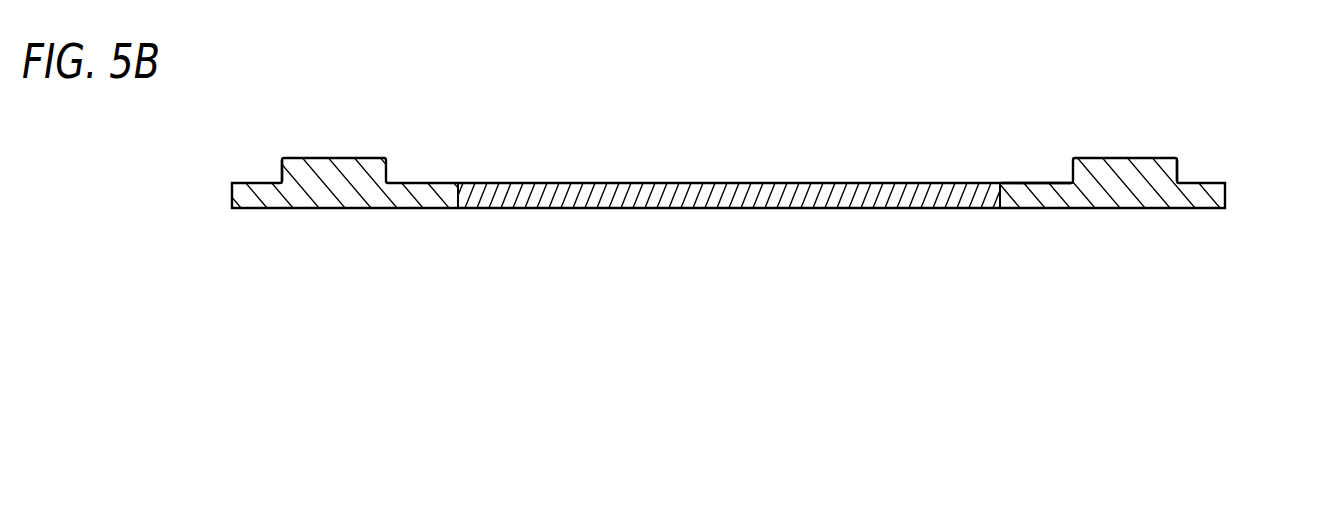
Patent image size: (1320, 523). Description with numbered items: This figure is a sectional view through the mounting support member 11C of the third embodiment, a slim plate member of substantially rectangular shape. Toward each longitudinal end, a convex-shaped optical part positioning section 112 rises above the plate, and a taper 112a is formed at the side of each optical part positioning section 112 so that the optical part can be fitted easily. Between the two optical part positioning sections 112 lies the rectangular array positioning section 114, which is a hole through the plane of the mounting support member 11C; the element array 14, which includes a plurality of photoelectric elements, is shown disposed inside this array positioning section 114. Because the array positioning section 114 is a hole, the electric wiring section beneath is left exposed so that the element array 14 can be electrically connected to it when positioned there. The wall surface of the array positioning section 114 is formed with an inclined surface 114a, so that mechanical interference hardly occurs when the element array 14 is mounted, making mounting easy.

The mounting support member 11C is at (1122, 208).
The optical part positioning section 112 is at (342, 165).
The taper 112a is at (281, 160).
The element array 14 is at (730, 185).
The array positioning section 114 is at (1015, 188).
The inclined surface 114a is at (1018, 182).